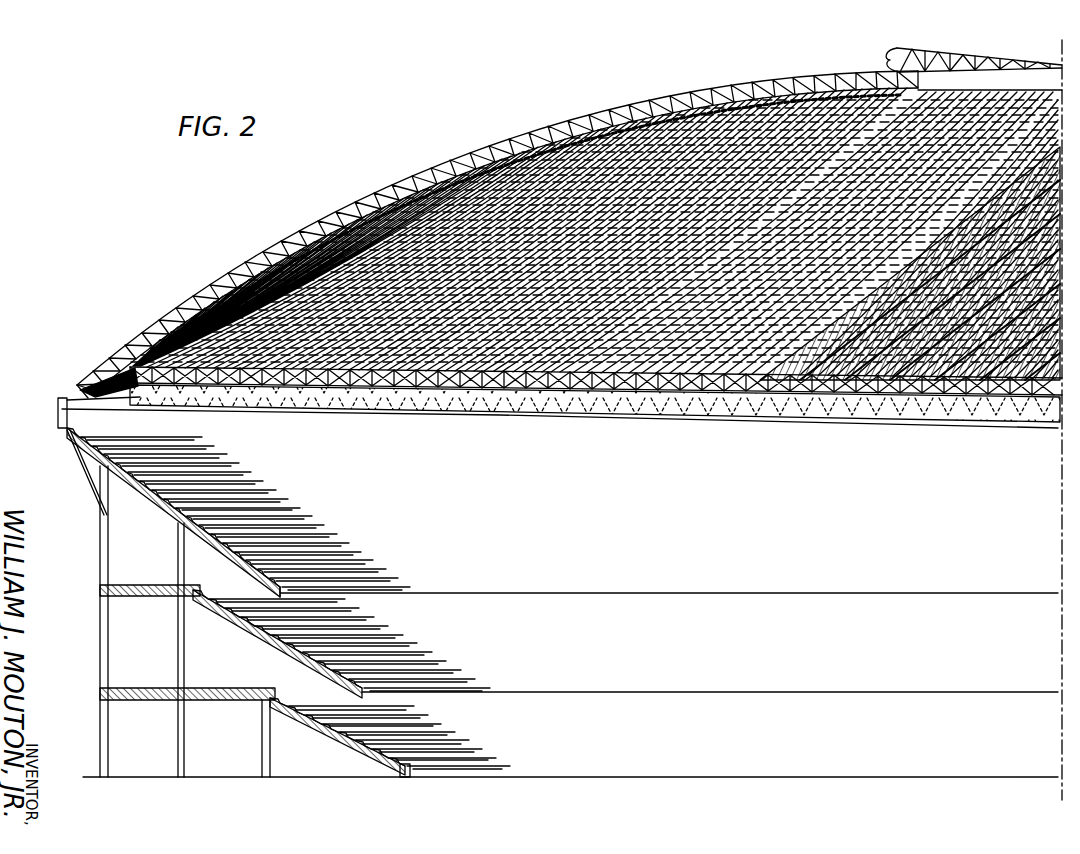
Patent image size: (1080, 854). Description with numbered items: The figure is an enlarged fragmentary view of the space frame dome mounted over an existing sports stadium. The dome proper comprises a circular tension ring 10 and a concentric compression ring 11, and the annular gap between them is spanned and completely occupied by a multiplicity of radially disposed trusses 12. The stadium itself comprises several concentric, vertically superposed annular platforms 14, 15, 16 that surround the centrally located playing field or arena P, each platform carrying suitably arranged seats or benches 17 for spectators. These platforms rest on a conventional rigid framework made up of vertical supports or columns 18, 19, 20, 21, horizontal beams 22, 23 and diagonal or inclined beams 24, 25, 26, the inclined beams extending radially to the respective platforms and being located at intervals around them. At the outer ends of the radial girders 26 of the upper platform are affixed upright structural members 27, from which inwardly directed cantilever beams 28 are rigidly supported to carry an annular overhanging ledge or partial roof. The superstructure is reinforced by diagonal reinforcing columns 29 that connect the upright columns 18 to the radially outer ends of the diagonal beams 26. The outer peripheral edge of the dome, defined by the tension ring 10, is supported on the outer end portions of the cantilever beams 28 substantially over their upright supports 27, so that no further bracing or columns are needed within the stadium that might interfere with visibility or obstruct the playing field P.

The tension ring 10 is at (97, 382).
The compression ring 11 is at (885, 51).
The radially disposed trusses 12 is at (456, 147).
The annular platform 14 is at (340, 745).
The annular platform 15 is at (265, 652).
The annular platform 16 is at (163, 519).
The seats or benches 17 is at (257, 510).
The vertical supports or columns 18 is at (100, 643).
The vertical supports or columns 19 is at (177, 648).
The vertical supports or columns 20 is at (262, 740).
The vertical supports or columns 21 is at (398, 773).
The horizontal beam 22 is at (150, 701).
The horizontal beam 23 is at (160, 583).
The diagonal or inclined beam 24 is at (322, 730).
The diagonal or inclined beam 25 is at (240, 627).
The diagonal or inclined beam 26 is at (68, 455).
The upright structural member 27 is at (60, 418).
The cantilever beam 28 is at (117, 412).
The diagonal reinforcing column 29 is at (82, 477).
The playing field or arena P is at (852, 777).